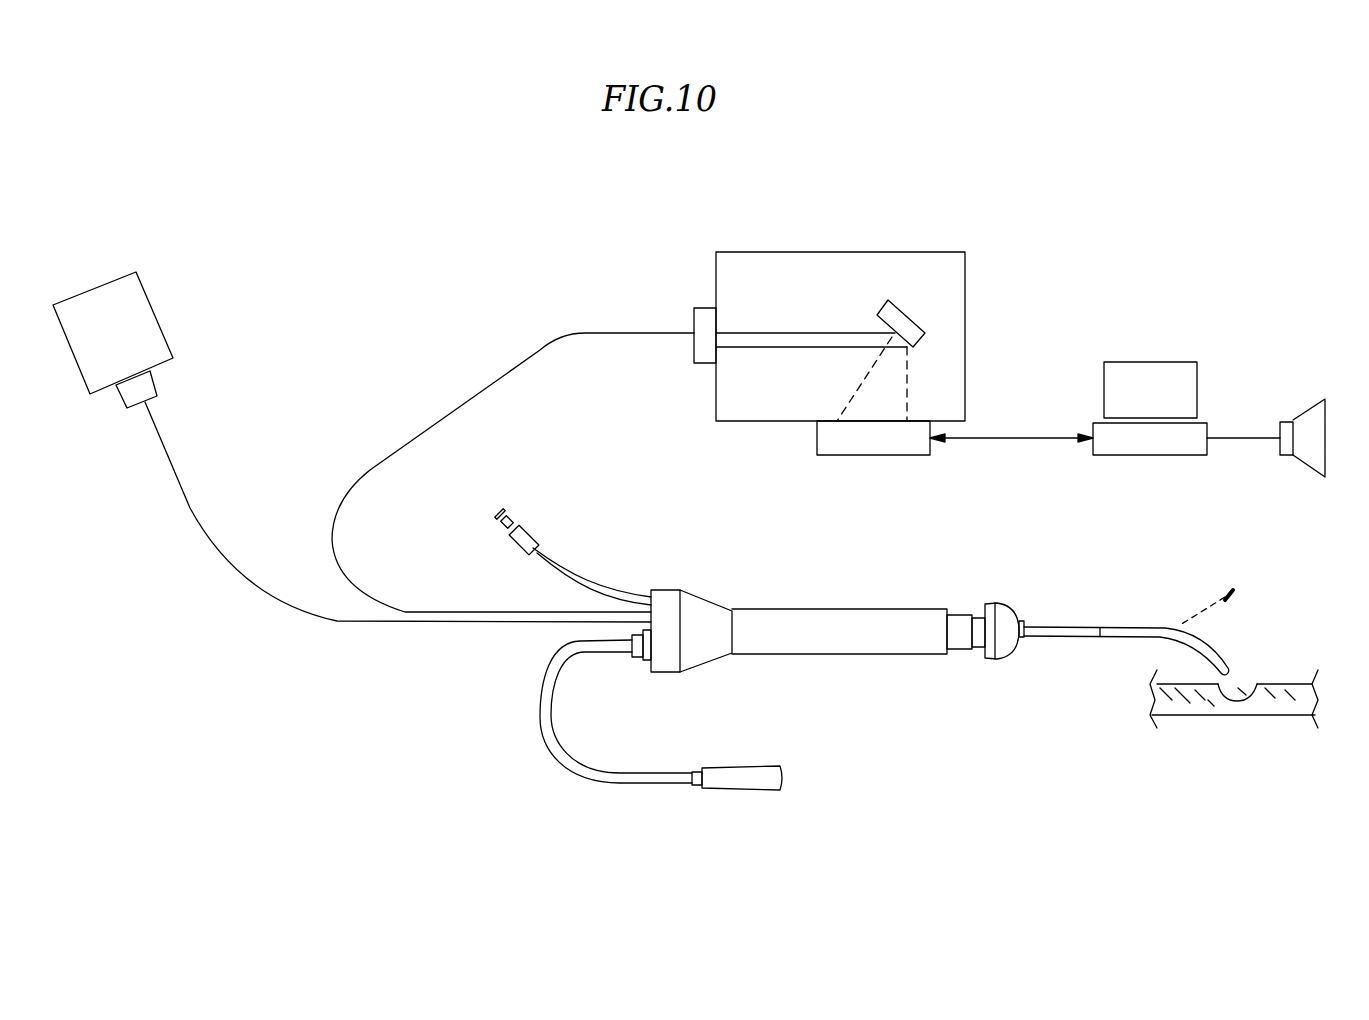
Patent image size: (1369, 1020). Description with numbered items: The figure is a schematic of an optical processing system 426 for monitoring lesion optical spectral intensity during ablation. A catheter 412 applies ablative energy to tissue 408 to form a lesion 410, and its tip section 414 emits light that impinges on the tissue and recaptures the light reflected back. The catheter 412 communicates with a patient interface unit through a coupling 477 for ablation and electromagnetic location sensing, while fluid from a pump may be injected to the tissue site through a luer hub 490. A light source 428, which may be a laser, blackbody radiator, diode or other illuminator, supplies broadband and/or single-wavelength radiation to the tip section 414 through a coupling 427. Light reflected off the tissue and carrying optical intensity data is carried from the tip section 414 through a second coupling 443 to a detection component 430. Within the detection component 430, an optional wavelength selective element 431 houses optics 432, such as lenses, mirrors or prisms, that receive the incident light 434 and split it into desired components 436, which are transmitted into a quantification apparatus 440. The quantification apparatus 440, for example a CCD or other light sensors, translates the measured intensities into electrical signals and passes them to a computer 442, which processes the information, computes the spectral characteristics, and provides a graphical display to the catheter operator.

The optical processing system 426 is at (455, 227).
The coupling 427 is at (168, 457).
The light source 428 is at (157, 311).
The detection component 430 is at (857, 333).
The wavelength selective element 431 is at (763, 252).
The optics 432 is at (903, 313).
The incident light 434 is at (749, 332).
The desired components 436 is at (907, 373).
The quantification apparatus 440 is at (875, 455).
The computer 442 is at (1152, 362).
The coupling 443 is at (512, 373).
The catheter 412 is at (953, 589).
The tip section 414 is at (1238, 681).
The lesion 410 is at (1238, 681).
The tissue 408 is at (1288, 716).
The coupling 477 is at (783, 775).
The luer hub 490 is at (527, 532).